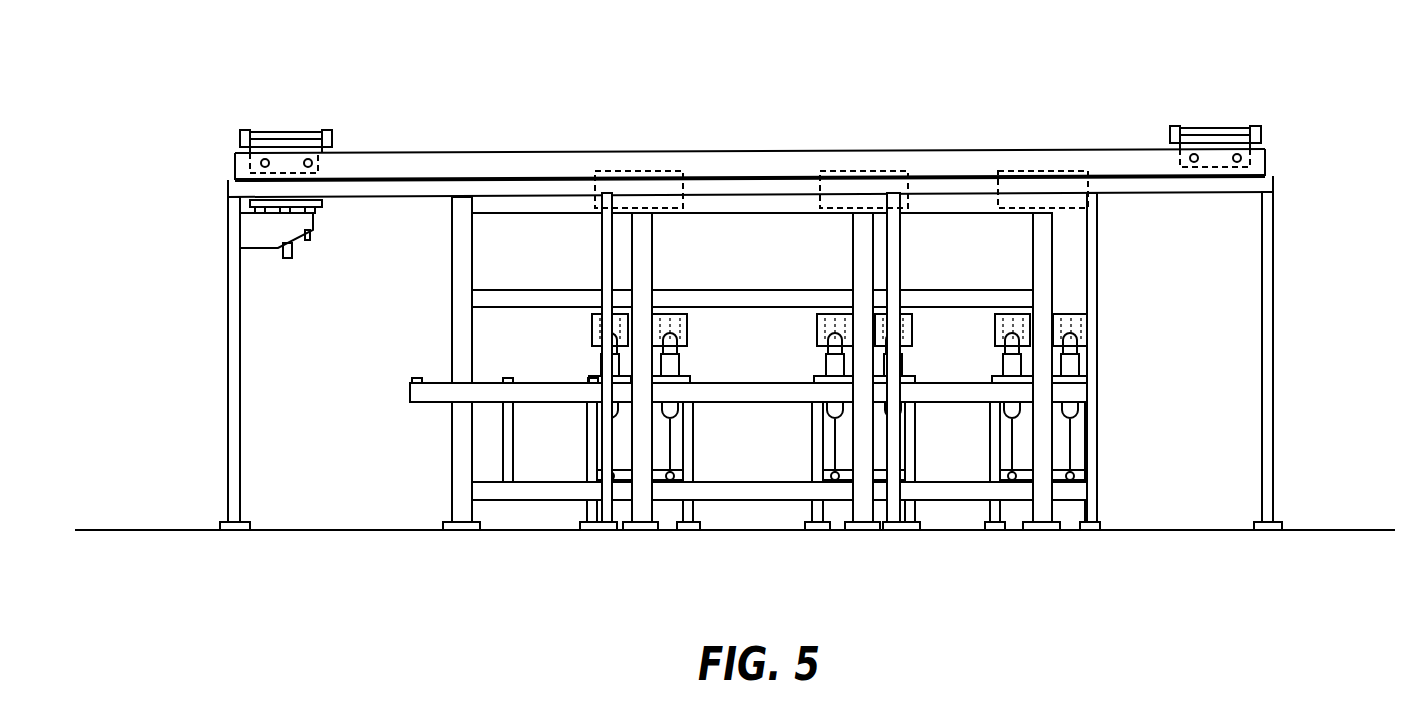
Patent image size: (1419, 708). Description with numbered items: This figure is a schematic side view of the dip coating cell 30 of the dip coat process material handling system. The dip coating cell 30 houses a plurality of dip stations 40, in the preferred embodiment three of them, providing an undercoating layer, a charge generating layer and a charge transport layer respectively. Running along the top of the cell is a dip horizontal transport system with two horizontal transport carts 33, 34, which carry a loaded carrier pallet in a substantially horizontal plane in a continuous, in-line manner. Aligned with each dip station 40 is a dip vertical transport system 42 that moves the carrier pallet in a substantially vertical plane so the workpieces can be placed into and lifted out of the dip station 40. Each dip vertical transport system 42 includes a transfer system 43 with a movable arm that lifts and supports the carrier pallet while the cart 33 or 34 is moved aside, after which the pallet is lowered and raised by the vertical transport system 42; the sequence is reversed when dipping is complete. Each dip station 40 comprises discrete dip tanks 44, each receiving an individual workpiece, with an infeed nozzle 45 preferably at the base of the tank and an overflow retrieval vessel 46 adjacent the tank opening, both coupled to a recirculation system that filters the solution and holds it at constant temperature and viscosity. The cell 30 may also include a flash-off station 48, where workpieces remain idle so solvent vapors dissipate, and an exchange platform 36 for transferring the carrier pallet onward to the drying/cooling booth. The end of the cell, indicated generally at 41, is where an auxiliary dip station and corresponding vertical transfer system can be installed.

The dip coating cell 30 is at (975, 83).
The horizontal transport cart 33 is at (1213, 130).
The horizontal transport cart 34 is at (290, 130).
The exchange platform 36 is at (262, 237).
The dip station 40 is at (563, 332).
The auxiliary dip station 41 is at (433, 494).
The dip vertical transport system 42 is at (638, 263).
The transfer system 43 is at (640, 170).
The dip tank 44 is at (1083, 365).
The infeed nozzle 45 is at (1087, 445).
The overflow retrieval vessel 46 is at (1088, 333).
The flash-off station 48 is at (317, 507).